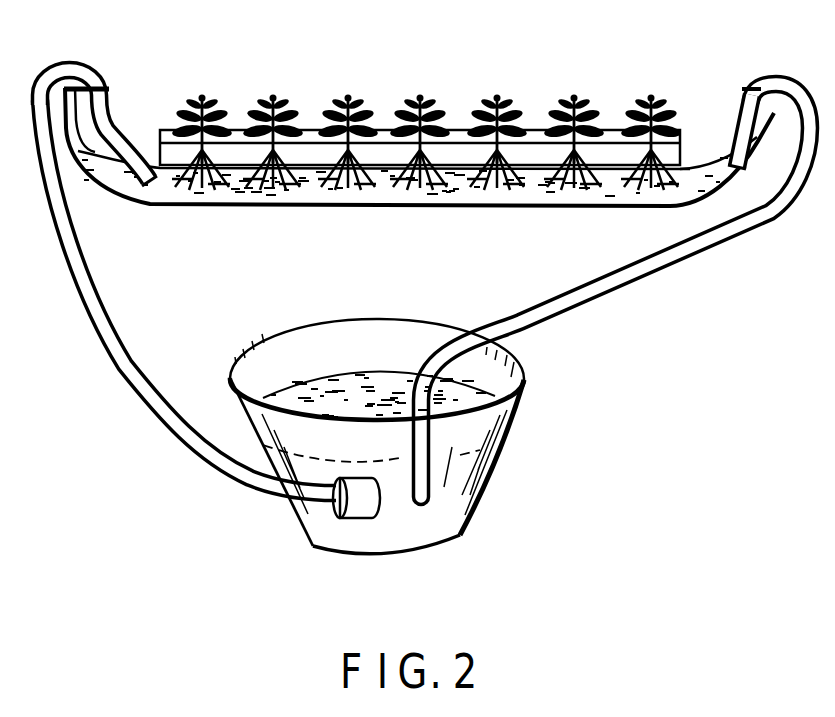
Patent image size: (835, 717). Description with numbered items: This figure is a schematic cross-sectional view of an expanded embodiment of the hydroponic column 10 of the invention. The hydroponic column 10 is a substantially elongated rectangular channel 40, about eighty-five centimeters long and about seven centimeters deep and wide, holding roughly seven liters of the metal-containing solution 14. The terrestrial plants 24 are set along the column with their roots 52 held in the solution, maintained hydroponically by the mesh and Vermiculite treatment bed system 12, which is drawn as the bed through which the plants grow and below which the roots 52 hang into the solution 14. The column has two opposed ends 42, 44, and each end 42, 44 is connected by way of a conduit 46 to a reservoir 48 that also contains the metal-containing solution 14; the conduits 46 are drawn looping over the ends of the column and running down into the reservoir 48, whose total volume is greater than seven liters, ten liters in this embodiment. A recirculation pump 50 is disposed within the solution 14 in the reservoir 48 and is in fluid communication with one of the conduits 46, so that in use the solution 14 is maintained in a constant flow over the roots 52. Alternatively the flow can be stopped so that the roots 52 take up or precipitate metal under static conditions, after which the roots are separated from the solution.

The hydroponic column 10 is at (124, 136).
The mesh and Vermiculite treatment bed system 12 is at (462, 154).
The metal-containing solution 14 is at (482, 463).
The terrestrial plants 24 is at (416, 100).
The elongated rectangular channel 40 is at (490, 219).
The first end of the column 42 is at (100, 86).
The second end of the column 44 is at (747, 87).
The conduit 46 is at (130, 357).
The reservoir 48 is at (520, 396).
The recirculation pump 50 is at (350, 513).
The roots 52 is at (310, 164).